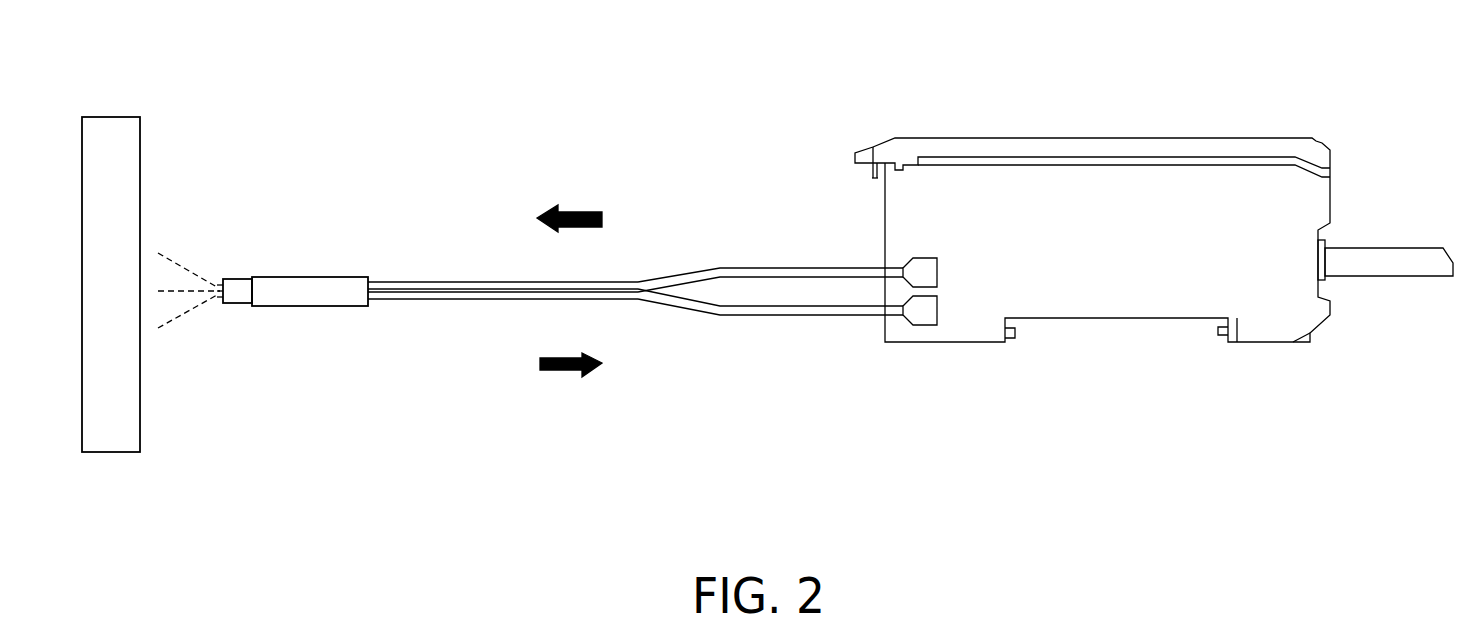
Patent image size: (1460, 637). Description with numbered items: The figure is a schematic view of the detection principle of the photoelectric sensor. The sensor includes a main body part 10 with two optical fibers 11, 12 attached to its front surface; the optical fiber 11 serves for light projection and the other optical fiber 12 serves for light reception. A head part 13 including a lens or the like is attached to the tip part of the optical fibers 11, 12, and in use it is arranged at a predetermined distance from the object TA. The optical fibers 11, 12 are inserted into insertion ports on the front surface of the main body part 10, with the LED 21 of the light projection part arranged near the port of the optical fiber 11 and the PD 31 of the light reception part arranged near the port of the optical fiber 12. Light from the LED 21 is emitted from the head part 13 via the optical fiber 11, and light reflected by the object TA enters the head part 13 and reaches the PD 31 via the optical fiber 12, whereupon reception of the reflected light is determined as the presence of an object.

The object TA is at (108, 117).
The head part 13 is at (309, 277).
The optical fiber 11 is at (765, 267).
The optical fiber 12 is at (765, 317).
The LED 21 is at (925, 266).
The PD 31 is at (925, 313).
The main body part 10 is at (1207, 138).